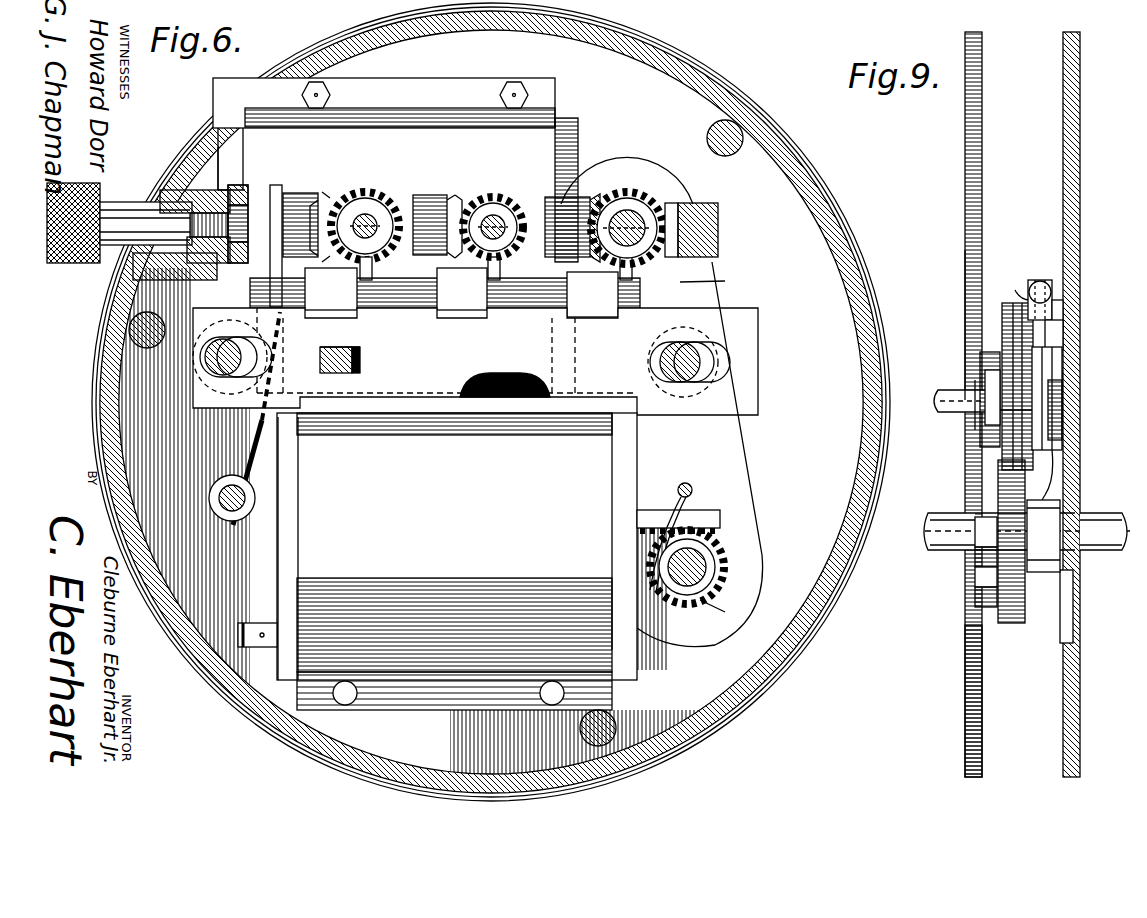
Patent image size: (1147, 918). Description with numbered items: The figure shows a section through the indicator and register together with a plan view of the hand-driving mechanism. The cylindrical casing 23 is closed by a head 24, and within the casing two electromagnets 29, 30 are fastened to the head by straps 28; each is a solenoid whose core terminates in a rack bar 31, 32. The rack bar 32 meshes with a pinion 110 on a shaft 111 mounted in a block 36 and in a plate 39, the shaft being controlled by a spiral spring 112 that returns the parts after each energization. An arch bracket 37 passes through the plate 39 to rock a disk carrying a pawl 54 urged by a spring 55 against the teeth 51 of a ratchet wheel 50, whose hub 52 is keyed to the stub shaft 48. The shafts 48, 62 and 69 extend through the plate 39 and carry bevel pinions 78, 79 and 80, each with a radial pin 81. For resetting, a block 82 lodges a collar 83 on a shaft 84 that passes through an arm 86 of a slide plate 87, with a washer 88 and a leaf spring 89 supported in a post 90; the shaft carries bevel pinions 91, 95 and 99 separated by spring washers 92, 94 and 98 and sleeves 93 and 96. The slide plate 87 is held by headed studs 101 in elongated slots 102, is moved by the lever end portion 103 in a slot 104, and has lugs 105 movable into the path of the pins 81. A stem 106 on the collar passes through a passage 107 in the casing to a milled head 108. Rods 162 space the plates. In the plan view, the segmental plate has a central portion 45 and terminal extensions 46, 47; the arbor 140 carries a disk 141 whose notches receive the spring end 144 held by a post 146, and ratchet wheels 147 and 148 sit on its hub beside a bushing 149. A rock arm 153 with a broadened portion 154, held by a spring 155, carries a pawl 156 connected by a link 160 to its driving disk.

In FIG. 6, the casing 23 is at (800, 612).
In FIG. 6, the head 24 is at (797, 450).
In FIG. 6, the straps 28 is at (437, 422).
In FIG. 6, the electromagnet 29 is at (566, 120).
In FIG. 6, the electromagnet 30 is at (272, 548).
In FIG. 6, the rack bar 31 is at (716, 280).
In FIG. 6, the rack bar 32 is at (700, 514).
In FIG. 6, the block 36 is at (765, 520).
In FIG. 6, the arch bracket 37 is at (720, 232).
In FIG. 6, the stub shaft 48 is at (633, 216).
In FIG. 9, the stub shaft 48 is at (1115, 550).
In FIG. 6, the shaft 62 is at (493, 222).
In FIG. 6, the shaft 69 is at (365, 221).
In FIG. 6, the bevel pinion 78 is at (627, 205).
In FIG. 6, the bevel pinion 79 is at (495, 208).
In FIG. 6, the bevel pinion 80 is at (365, 210).
In FIG. 6, the pin 81 is at (372, 272).
In FIG. 6, the block 82 is at (150, 262).
In FIG. 6, the collar 83 is at (215, 172).
In FIG. 6, the shaft 84 is at (245, 215).
In FIG. 6, the arm 86 is at (298, 215).
In FIG. 6, the slide plate 87 is at (475, 361).
In FIG. 6, the washer 88 is at (249, 205).
In FIG. 6, the spring 89 is at (280, 305).
In FIG. 6, the post 90 is at (245, 490).
In FIG. 6, the bevel pinion 91 is at (336, 200).
In FIG. 6, the spring washer 92 is at (312, 205).
In FIG. 6, the sleeve 93 is at (423, 214).
In FIG. 6, the spring washer 94 is at (425, 210).
In FIG. 6, the bevel pinion 95 is at (464, 200).
In FIG. 6, the sleeve 96 is at (559, 216).
In FIG. 6, the spring washer 98 is at (552, 262).
In FIG. 6, the bevel pinion 99 is at (597, 195).
In FIG. 6, the headed studs 101 is at (258, 329).
In FIG. 6, the elongated slots 102 is at (285, 352).
In FIG. 6, the end portion 103 is at (362, 360).
In FIG. 6, the slot 104 is at (356, 349).
In FIG. 6, the lugs 105 is at (461, 292).
In FIG. 6, the stem 106 is at (124, 210).
In FIG. 6, the passage 107 is at (175, 200).
In FIG. 6, the milled head 108 is at (78, 263).
In FIG. 6, the pinion 110 is at (708, 585).
In FIG. 6, the shaft 111 is at (715, 575).
In FIG. 6, the spiral spring 112 is at (728, 617).
In FIG. 6, the rods 162 is at (735, 148).
In FIG. 9, the plate 39 is at (1081, 170).
In FIG. 9, the central portion 45 is at (975, 426).
In FIG. 9, the terminal extension 46 is at (984, 72).
In FIG. 9, the terminal extension 47 is at (1012, 625).
In FIG. 9, the ratchet wheel 50 is at (980, 547).
In FIG. 9, the teeth 51 is at (985, 560).
In FIG. 9, the hub 52 is at (975, 516).
In FIG. 9, the pawl 54 is at (992, 590).
In FIG. 9, the spring 55 is at (990, 572).
In FIG. 9, the arbor 140 is at (937, 402).
In FIG. 9, the disk 141 is at (1062, 418).
In FIG. 9, the end of detent spring 144 is at (1025, 300).
In FIG. 9, the post 146 is at (1062, 320).
In FIG. 9, the ratchet wheel 147 is at (1004, 345).
In FIG. 9, the ratchet wheel 148 is at (1062, 438).
In FIG. 9, the bushing 149 is at (1003, 420).
In FIG. 9, the rock arm 153 is at (1068, 346).
In FIG. 9, the broadened portion 154 is at (985, 385).
In FIG. 9, the spring 155 is at (985, 372).
In FIG. 9, the pawl 156 is at (1040, 282).
In FIG. 9, the link 160 is at (1052, 462).